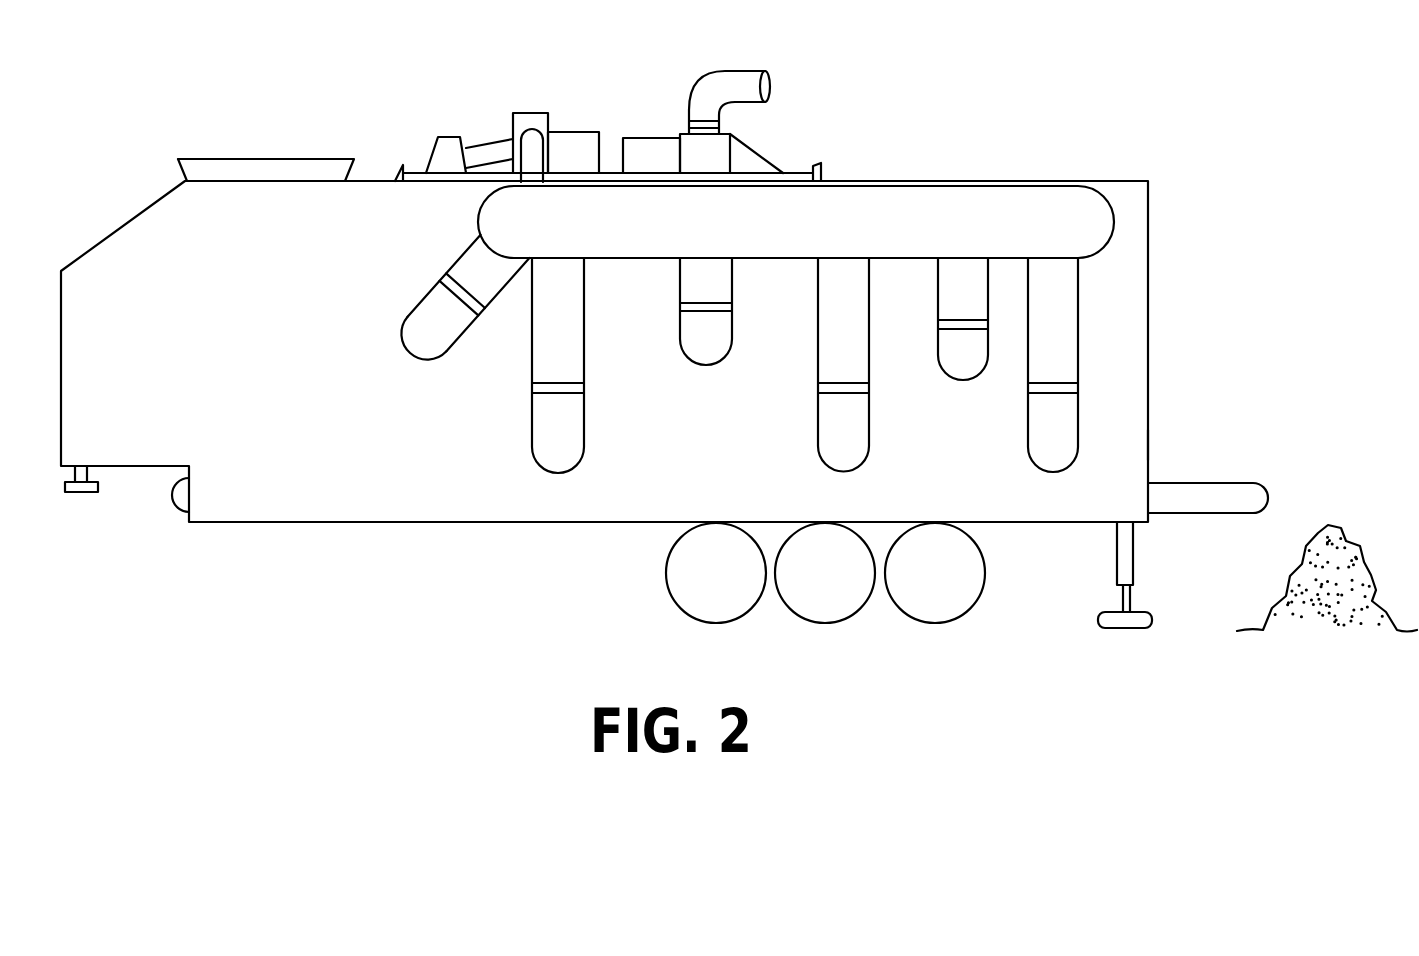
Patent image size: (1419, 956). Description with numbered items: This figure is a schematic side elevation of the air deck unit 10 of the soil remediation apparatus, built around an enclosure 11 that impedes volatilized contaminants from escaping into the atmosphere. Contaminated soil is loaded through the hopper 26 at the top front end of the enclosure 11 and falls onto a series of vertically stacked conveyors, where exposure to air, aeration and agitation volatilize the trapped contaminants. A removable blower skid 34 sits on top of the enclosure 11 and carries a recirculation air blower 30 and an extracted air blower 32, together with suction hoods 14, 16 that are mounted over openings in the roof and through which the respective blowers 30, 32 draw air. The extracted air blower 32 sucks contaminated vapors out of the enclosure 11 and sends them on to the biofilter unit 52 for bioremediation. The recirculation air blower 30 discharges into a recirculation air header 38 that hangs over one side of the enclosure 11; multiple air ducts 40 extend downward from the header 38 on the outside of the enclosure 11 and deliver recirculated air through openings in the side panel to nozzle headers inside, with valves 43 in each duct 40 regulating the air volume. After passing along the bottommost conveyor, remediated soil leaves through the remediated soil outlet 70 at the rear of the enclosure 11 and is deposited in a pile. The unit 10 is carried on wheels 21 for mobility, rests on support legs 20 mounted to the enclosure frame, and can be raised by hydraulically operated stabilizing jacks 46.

The air deck unit 10 is at (739, 356).
The enclosure 11 is at (1127, 300).
The suction hood 14 is at (448, 138).
The suction hood 16 is at (745, 160).
The support legs 20 is at (1130, 595).
The wheels 21 is at (945, 590).
The hopper 26 is at (266, 160).
The recirculation air blower 30 is at (573, 132).
The extracted air blower 32 is at (655, 135).
The blower skid 34 is at (803, 170).
The recirculation air header 38 is at (1050, 212).
The air ducts 40 is at (558, 435).
The valves 43 is at (1053, 391).
The stabilizing jacks 46 is at (1133, 560).
The biofilter unit 52 is at (775, 87).
The remediated soil outlet 70 is at (1148, 443).